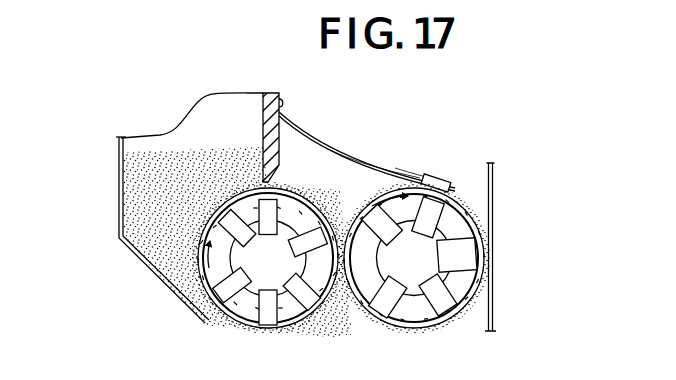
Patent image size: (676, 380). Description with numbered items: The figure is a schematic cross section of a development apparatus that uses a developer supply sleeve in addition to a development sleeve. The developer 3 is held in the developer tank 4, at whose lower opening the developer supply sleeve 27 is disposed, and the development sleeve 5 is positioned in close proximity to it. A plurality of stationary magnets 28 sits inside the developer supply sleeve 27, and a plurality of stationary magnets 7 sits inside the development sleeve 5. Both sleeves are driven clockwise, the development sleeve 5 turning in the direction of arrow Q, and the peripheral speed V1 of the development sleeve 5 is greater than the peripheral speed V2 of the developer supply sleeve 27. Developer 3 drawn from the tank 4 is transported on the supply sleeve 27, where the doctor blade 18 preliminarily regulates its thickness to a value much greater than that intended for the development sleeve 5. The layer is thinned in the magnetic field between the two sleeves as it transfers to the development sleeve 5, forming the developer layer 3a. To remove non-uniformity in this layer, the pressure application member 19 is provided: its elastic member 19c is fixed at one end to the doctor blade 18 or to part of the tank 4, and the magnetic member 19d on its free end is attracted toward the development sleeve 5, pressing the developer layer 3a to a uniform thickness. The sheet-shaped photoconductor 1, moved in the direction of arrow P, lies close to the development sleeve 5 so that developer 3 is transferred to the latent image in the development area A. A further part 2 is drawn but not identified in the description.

The photoconductor 1 is at (487, 320).
The blade 2 is at (319, 129).
The developer 3 is at (187, 180).
The developer layer 3a is at (360, 203).
The developer tank 4 is at (118, 188).
The development sleeve 5 is at (377, 318).
The stationary magnets 7 is at (385, 312).
The doctor blade 18 is at (263, 112).
The pressure application member 19 is at (401, 167).
The elastic member 19c is at (350, 158).
The magnetic member 19d is at (441, 177).
The developer supply sleeve 27 is at (278, 333).
The stationary magnets 28 is at (257, 315).
The direction of rotation of development sleeve Q is at (393, 191).
The peripheral speed of development sleeve V1 is at (391, 209).
The peripheral speed of developer supply sleeve V2 is at (205, 255).
The direction of rotation of photoconductor P is at (507, 266).
The development area A is at (491, 258).